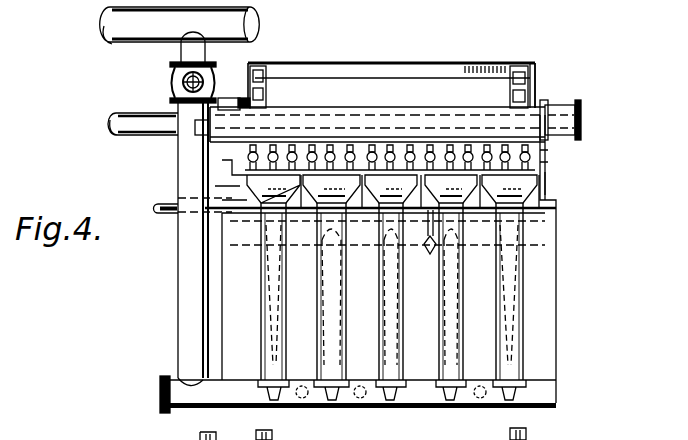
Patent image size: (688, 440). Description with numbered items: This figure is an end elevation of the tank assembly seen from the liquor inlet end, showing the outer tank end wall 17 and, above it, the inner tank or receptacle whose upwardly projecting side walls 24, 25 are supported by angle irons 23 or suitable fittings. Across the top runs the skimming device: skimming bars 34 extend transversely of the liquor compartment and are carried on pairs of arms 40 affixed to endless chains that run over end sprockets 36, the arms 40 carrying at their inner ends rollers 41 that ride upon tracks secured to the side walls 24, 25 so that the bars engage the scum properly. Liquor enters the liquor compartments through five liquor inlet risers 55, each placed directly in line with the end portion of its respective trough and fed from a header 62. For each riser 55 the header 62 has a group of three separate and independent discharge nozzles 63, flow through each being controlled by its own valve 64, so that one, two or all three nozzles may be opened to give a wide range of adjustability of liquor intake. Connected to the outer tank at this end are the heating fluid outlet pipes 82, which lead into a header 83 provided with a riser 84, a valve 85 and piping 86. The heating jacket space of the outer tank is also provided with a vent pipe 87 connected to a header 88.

The outer tank end wall 17 is at (549, 348).
The angle irons 23 is at (556, 209).
The side wall of the inner tank 24 is at (255, 185).
The side wall of the inner tank 25 is at (545, 185).
The skimming bars 34 is at (341, 70).
The end sprockets 36 is at (526, 436).
The arms 40 is at (540, 78).
The rollers 41 is at (548, 100).
The liquor inlet risers 55 is at (268, 330).
The header 62 is at (114, 114).
The discharge nozzles 63 is at (455, 148).
The valves 64 is at (398, 150).
The heating fluid outlet pipes 82 is at (318, 409).
The header 83 is at (188, 398).
The riser 84 is at (178, 292).
The valve 85 is at (183, 80).
The piping 86 is at (106, 20).
The vent pipe 87 is at (434, 246).
The header 88 is at (167, 218).